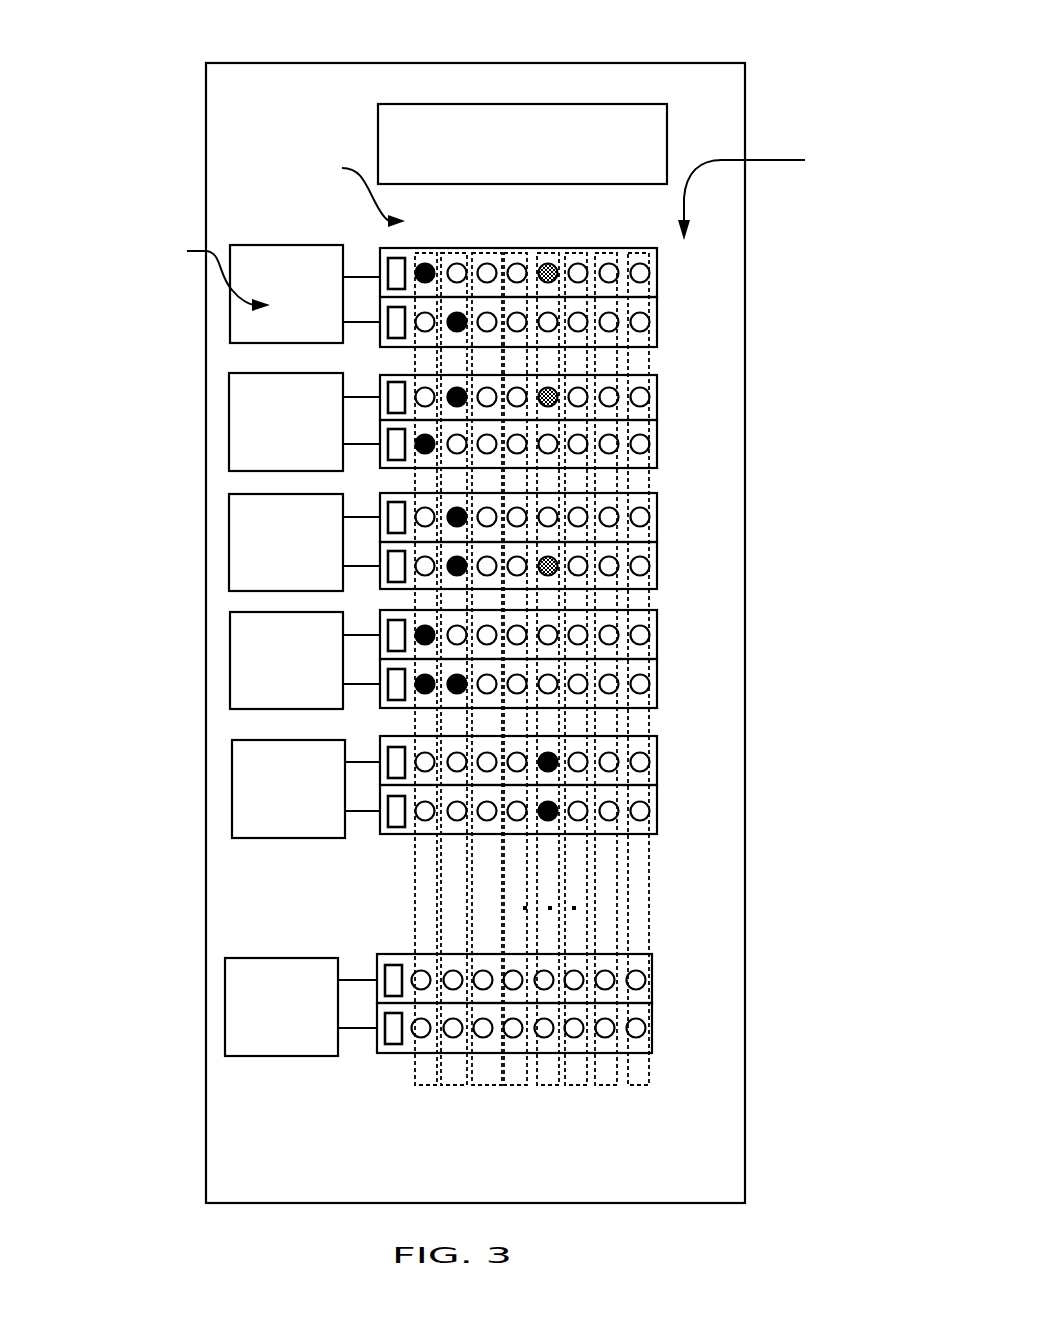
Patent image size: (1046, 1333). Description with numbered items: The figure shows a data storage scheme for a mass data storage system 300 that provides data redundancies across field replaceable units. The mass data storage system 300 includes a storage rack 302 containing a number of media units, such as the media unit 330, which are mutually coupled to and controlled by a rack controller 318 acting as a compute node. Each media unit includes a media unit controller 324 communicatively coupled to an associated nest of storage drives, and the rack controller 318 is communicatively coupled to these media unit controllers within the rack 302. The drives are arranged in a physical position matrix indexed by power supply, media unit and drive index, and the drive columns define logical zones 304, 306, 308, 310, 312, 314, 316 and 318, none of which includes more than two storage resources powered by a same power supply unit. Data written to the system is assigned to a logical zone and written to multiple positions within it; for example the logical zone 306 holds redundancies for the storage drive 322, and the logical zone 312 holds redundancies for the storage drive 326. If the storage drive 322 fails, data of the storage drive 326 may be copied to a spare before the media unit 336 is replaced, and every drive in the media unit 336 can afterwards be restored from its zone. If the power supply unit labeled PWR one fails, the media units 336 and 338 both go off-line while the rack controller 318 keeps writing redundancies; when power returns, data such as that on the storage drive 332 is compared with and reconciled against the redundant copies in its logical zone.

The mass data storage system 300 is at (475, 606).
The storage rack 302 is at (338, 63).
The logical zone 304 is at (425, 1085).
The logical zone 306 is at (448, 1085).
The logical zone 308 is at (483, 1085).
The logical zone 310 is at (515, 1085).
The logical zone 312 is at (543, 1086).
The logical zone 314 is at (573, 1087).
The logical zone 316 is at (607, 1087).
The rack controller 318 is at (640, 1086).
The storage drive 322 is at (455, 392).
The media unit controller 324 is at (400, 512).
The storage drive 326 is at (557, 394).
The media unit 330 is at (382, 271).
The storage drive 332 is at (648, 315).
The media unit 336 is at (657, 406).
The media unit 338 is at (657, 437).